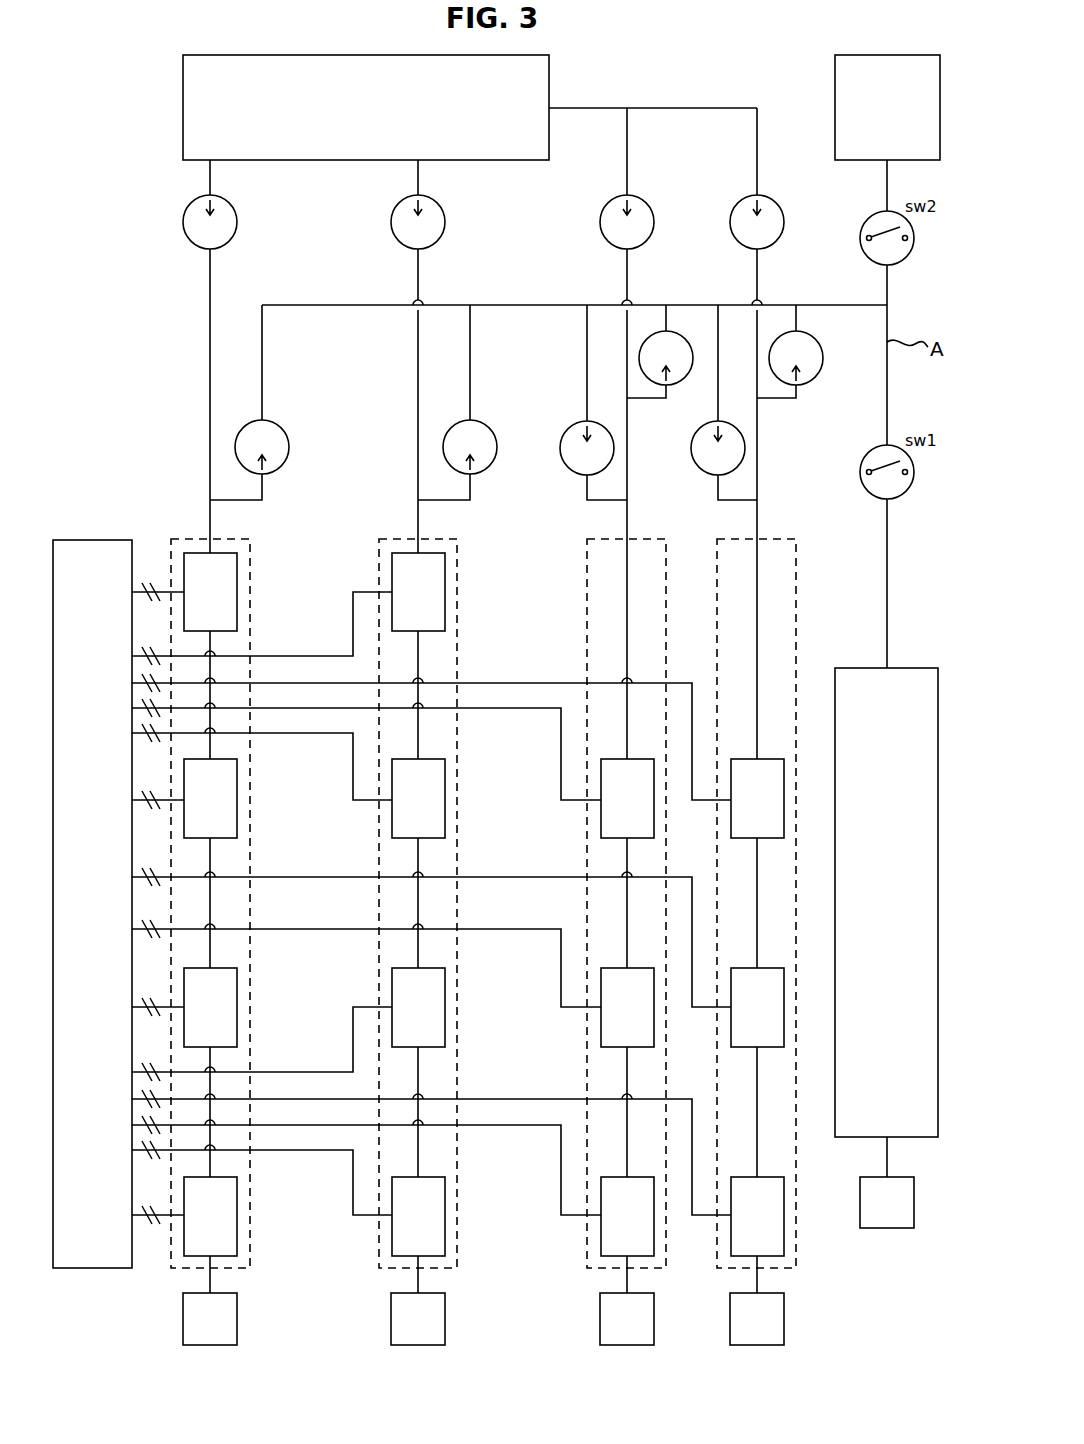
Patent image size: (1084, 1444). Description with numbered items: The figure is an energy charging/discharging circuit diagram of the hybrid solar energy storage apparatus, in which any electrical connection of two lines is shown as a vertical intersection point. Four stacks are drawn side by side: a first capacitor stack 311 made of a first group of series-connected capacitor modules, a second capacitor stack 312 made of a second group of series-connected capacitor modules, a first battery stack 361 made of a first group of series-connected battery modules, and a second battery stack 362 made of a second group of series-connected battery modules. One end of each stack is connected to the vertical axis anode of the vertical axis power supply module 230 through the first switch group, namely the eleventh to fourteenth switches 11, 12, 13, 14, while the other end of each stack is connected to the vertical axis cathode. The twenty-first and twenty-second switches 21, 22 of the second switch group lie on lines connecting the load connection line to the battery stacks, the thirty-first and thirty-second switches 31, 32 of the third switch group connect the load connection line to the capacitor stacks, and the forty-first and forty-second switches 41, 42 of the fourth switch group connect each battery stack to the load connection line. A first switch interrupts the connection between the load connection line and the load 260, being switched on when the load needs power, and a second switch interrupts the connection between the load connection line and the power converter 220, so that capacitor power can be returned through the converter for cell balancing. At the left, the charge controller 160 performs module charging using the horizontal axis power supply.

The eleventh switch 11 is at (198, 356).
The twelfth switch 12 is at (406, 356).
The thirteenth switch 13 is at (615, 433).
The fourteenth switch 14 is at (745, 433).
The twenty-first switch 21 is at (584, 402).
The twenty-second switch 22 is at (715, 402).
The thirty-first switch 31 is at (254, 402).
The thirty-second switch 32 is at (462, 402).
The forty-first switch 41 is at (664, 351).
The forty-second switch 42 is at (794, 351).
The charge controller 160 is at (392, 904).
The power converter 220 is at (887, 107).
The vertical axis power supply module 230 is at (470, 107).
The load 260 is at (886, 948).
The first capacitor stack 311 is at (252, 1270).
The second capacitor stack 312 is at (459, 1270).
The first battery stack 361 is at (668, 1270).
The second battery stack 362 is at (798, 1270).